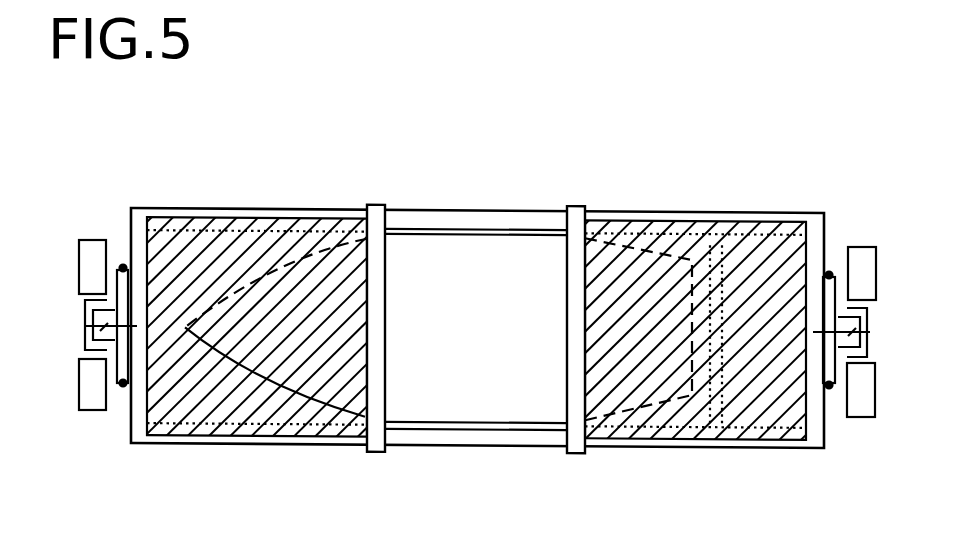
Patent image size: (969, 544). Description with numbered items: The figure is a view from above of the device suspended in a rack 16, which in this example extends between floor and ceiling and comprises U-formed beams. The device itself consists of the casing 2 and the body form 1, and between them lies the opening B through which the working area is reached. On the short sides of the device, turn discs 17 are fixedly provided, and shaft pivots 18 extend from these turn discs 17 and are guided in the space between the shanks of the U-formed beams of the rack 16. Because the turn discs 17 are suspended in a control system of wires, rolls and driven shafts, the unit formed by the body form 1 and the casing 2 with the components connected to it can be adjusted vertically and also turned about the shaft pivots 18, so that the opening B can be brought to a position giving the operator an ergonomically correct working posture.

The body form 1 is at (318, 398).
The casing 2 is at (278, 214).
The opening B is at (465, 262).
The rack 16 is at (92, 268).
The turn disc 17 is at (123, 380).
The shaft pivot 18 is at (85, 348).